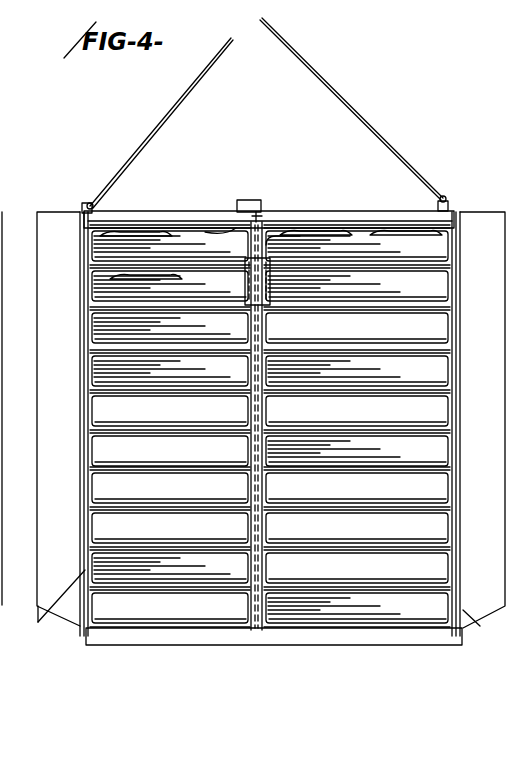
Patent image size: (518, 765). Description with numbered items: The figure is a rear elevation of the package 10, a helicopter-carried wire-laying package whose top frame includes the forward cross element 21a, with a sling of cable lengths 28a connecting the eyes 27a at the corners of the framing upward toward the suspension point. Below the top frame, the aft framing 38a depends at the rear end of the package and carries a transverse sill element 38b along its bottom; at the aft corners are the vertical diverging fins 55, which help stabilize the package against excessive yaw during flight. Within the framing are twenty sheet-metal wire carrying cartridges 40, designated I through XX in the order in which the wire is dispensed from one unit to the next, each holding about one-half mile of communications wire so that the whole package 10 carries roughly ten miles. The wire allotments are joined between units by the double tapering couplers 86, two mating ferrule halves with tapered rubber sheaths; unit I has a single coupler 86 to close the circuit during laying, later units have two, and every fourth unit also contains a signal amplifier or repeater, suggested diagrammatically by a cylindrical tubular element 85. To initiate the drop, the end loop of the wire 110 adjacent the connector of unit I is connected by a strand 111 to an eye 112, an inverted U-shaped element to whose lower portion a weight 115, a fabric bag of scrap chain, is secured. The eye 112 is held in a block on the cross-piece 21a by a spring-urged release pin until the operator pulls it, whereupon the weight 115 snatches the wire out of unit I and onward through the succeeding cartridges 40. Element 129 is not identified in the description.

The package 10 is at (340, 203).
The forward cross element 21a is at (140, 203).
The eyes 27a is at (88, 203).
The cable lengths 28a is at (360, 118).
The aft framing 38a is at (80, 626).
The transverse sill element 38b is at (250, 636).
The wire carrying units or cartridges 40 is at (106, 486).
The vertical diverging fins 55 is at (2, 222).
The cylindrical tubular elements 85 is at (172, 268).
The double tapering elements 86 is at (170, 230).
The end loop of the wire 110 is at (212, 230).
The strand 111 is at (246, 222).
The eye 112 is at (263, 218).
The weight 115 is at (276, 277).
The lever 129 is at (276, 236).